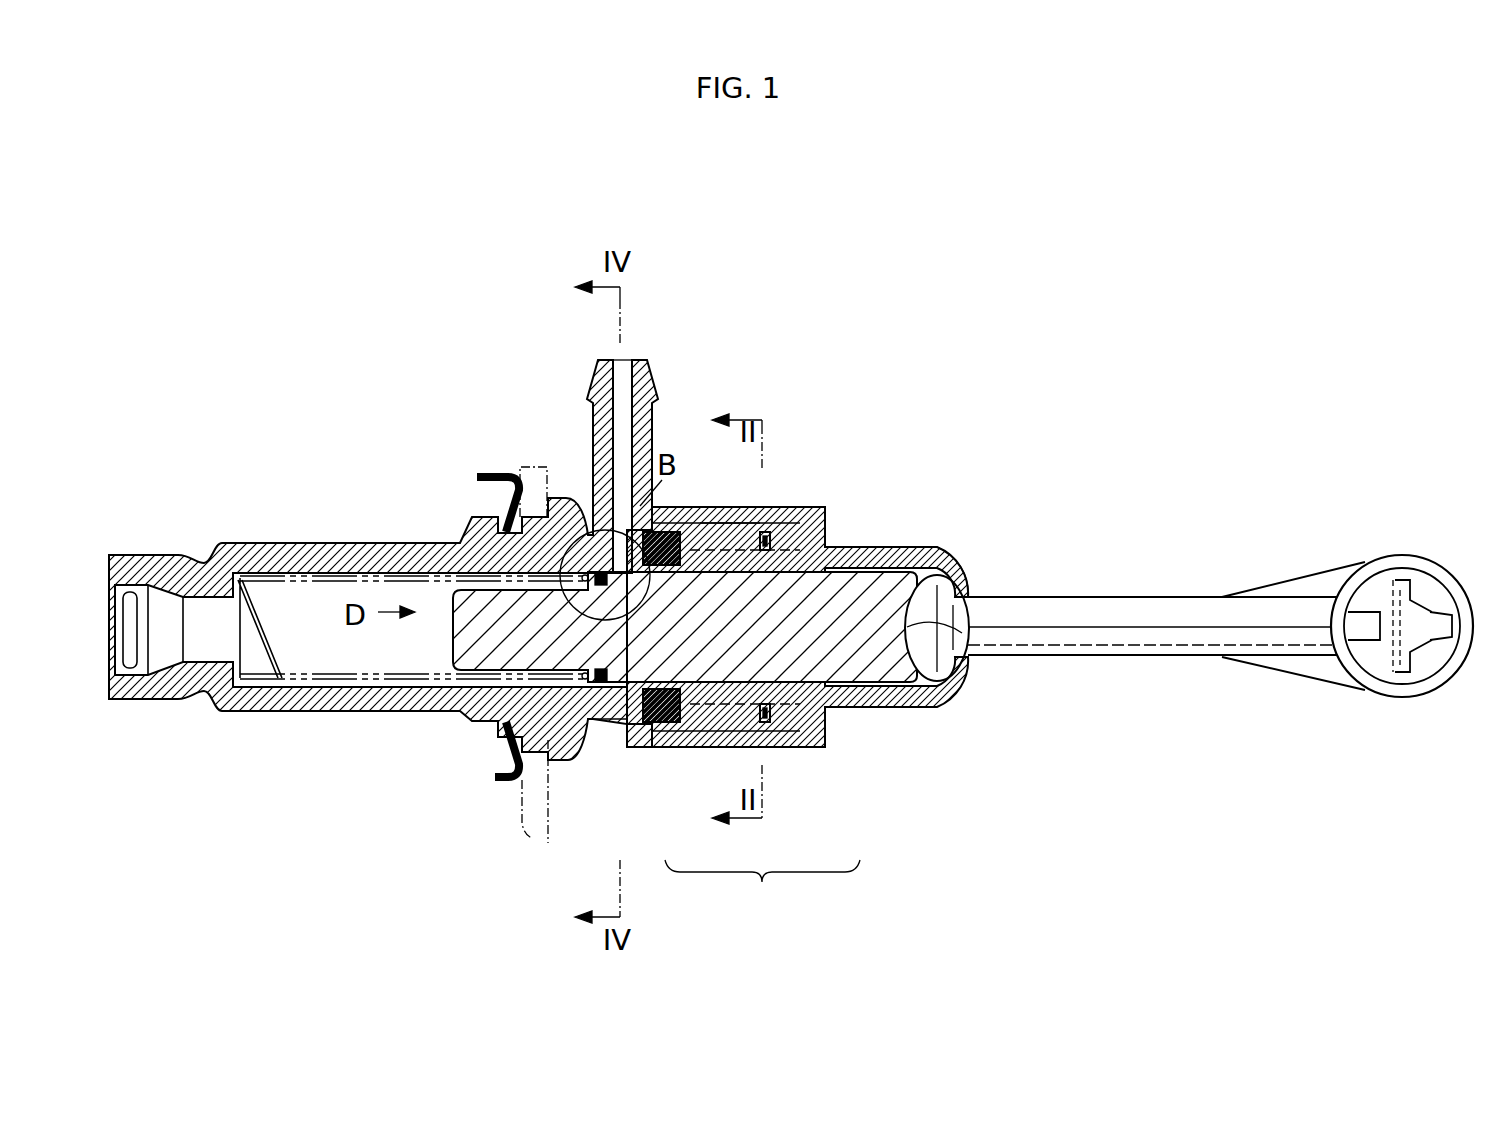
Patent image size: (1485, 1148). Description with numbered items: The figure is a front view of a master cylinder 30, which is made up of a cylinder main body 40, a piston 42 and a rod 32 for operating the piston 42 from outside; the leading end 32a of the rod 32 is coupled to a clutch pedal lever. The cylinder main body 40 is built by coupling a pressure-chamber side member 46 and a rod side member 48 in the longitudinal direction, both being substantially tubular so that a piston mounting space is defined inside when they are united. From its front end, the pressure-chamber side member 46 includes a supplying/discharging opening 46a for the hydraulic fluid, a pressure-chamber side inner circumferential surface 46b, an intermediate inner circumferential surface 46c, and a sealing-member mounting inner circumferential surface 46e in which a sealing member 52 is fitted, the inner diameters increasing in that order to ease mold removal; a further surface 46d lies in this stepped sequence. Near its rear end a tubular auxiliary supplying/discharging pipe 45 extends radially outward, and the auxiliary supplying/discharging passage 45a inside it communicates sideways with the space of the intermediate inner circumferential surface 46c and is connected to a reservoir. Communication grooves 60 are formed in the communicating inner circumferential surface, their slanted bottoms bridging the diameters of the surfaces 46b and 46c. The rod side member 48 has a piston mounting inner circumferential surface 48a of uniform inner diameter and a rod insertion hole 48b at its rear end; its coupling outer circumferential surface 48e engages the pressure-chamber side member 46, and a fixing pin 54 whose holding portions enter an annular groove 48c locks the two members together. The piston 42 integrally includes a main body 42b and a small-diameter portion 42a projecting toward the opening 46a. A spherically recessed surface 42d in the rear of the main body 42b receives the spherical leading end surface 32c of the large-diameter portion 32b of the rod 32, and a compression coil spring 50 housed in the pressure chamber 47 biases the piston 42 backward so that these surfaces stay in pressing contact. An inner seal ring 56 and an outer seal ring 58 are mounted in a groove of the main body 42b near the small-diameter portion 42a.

The master cylinder 30 is at (994, 328).
The rod 32 is at (1128, 605).
The leading end of rod 32a is at (1392, 583).
The large-diameter portion 32b is at (952, 686).
The leading end surface of large-diameter portion 32c is at (910, 692).
The cylinder main body 40 is at (762, 891).
The piston 42 is at (886, 588).
The small-diameter portion 42a is at (470, 612).
The main body 42b is at (848, 598).
The spherically recessed surface 42d is at (966, 645).
The auxiliary supplying/discharging pipe 45 is at (645, 445).
The auxiliary supplying/discharging passage 45a is at (622, 447).
The pressure-chamber side member 46 is at (688, 762).
The supplying/discharging opening 46a is at (163, 608).
The pressure-chamber side inner circumferential surface 46b is at (338, 672).
The intermediate inner circumferential surface 46c is at (632, 706).
The rear end portion of cylinder body 46d is at (664, 745).
The sealing-member mounting inner circumferential surface / coupling inner circumfer 46e is at (795, 750).
The pressure chamber 47 is at (287, 605).
The rod side member 48 is at (864, 728).
The piston mounting inner circumferential surface 48a is at (868, 708).
The rod insertion hole 48b is at (968, 588).
The annular groove 48c is at (768, 515).
The coupling outer circumferential surface 48e is at (748, 522).
The compression coil spring 50 is at (258, 652).
The sealing member 52 is at (672, 540).
The fixing pin 54 is at (768, 532).
The inner seal ring 56 is at (650, 573).
The outer seal ring 58 is at (592, 565).
The communication groove 60 is at (597, 705).